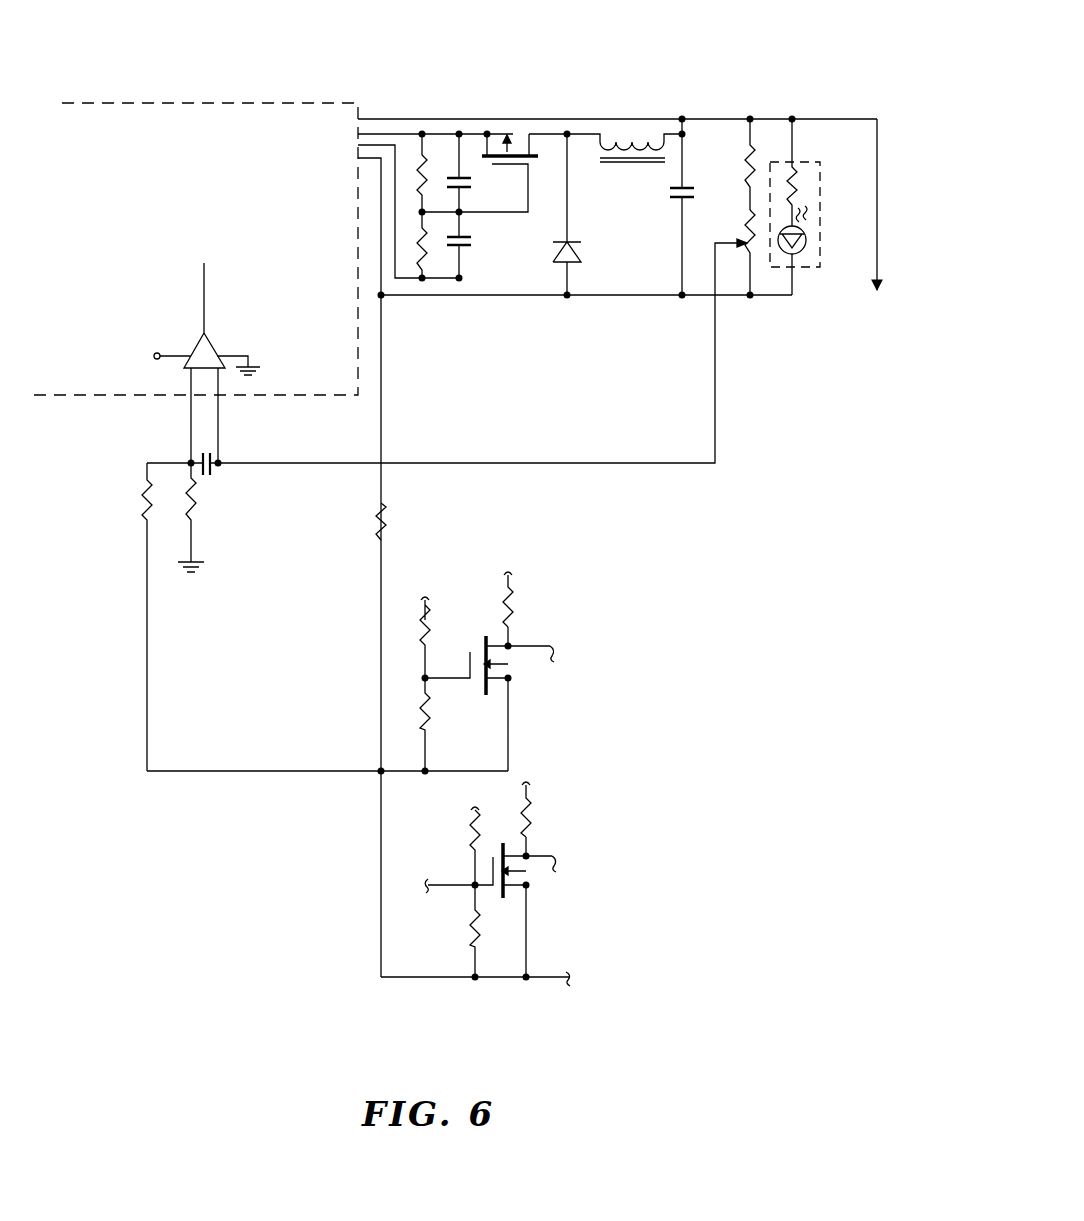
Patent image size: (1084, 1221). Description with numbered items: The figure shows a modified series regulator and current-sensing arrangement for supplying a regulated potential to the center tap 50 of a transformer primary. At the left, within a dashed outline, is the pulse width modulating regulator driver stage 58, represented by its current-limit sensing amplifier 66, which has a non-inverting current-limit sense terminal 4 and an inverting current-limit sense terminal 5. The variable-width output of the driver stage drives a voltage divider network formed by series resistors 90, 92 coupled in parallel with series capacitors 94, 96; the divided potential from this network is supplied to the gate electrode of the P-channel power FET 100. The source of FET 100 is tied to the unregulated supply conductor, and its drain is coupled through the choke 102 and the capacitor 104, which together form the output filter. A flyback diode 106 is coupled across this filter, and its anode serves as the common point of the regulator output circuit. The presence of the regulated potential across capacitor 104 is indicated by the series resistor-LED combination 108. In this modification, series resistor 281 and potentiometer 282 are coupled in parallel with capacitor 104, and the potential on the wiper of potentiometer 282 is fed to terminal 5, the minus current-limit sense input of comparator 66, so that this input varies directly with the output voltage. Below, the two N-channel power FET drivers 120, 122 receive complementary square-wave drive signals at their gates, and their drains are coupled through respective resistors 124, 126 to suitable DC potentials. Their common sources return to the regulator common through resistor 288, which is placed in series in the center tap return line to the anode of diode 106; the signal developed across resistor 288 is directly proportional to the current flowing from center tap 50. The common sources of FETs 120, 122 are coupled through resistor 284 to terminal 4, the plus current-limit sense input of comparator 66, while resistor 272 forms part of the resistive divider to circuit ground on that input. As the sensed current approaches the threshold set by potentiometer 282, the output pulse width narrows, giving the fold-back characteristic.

The regulator driver stage 58 is at (194, 249).
The current-limit sensing amplifier 66 is at (222, 343).
The non-inverting current-limit sense terminal 4 is at (191, 420).
The inverting current-limit sense terminal 5 is at (218, 417).
The resistor 284 is at (143, 494).
The resistor 272 is at (197, 495).
The resistor 288 is at (386, 520).
The series resistor 90 is at (424, 176).
The series resistor 92 is at (425, 253).
The series capacitor 94 is at (469, 186).
The series capacitor 96 is at (469, 239).
The P-channel power FET 100 is at (519, 126).
The choke 102 is at (636, 127).
The capacitor 104 is at (673, 193).
The flyback diode 106 is at (581, 251).
The series resistor 281 is at (748, 159).
The potentiometer 282 is at (748, 214).
The series resistor-LED combination 108 is at (824, 266).
The center tap 50 is at (870, 245).
The power FET driver 120 is at (556, 675).
The power FET driver 122 is at (557, 879).
The resistor 124 is at (514, 606).
The resistor 126 is at (532, 821).